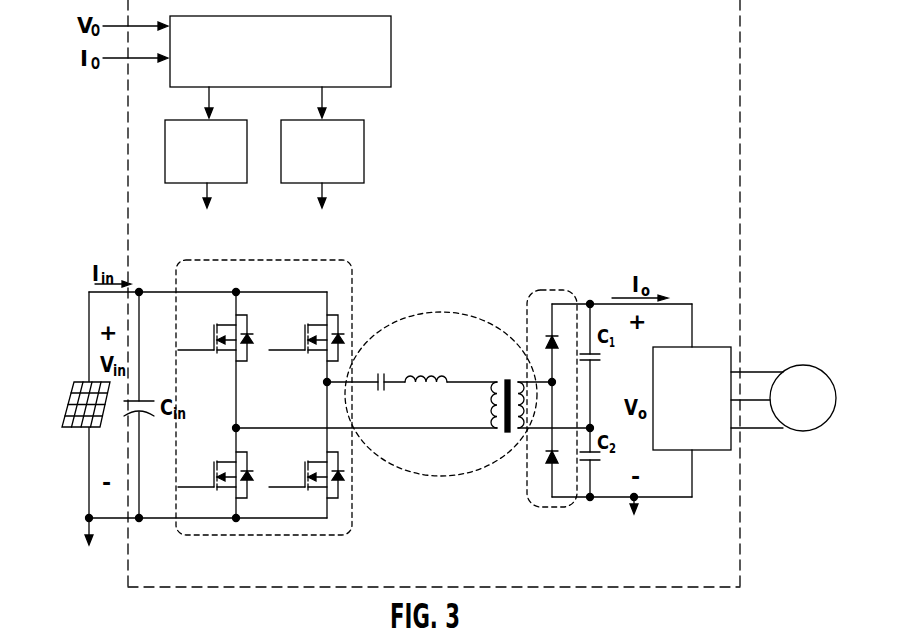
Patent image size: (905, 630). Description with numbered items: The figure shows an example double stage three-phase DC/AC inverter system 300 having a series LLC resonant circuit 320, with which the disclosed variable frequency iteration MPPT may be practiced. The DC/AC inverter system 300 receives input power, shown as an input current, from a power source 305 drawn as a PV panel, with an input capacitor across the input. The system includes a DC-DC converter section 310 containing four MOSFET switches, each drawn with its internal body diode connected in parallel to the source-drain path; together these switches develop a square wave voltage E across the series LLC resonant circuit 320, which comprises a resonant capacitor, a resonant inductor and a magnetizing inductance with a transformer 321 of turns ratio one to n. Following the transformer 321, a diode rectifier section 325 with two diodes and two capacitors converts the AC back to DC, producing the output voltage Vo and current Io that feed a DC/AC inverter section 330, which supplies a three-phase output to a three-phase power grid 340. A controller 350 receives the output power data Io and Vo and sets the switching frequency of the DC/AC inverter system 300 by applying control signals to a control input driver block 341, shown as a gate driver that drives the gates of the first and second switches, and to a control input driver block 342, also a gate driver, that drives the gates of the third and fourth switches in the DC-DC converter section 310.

The double stage DC/AC inverter system 300 is at (740, 132).
The power source 305 is at (63, 418).
The DC-DC converter section 310 is at (184, 535).
The series LLC resonant circuit 320 is at (386, 396).
The transformer 321 is at (505, 433).
The diode rectifier section 325 is at (556, 290).
The DC/AC inverter section 330 is at (706, 347).
The three-phase power grid 340 is at (828, 372).
The control input driver block 341 is at (165, 162).
The control input driver block 342 is at (364, 145).
The controller 350 is at (280, 67).